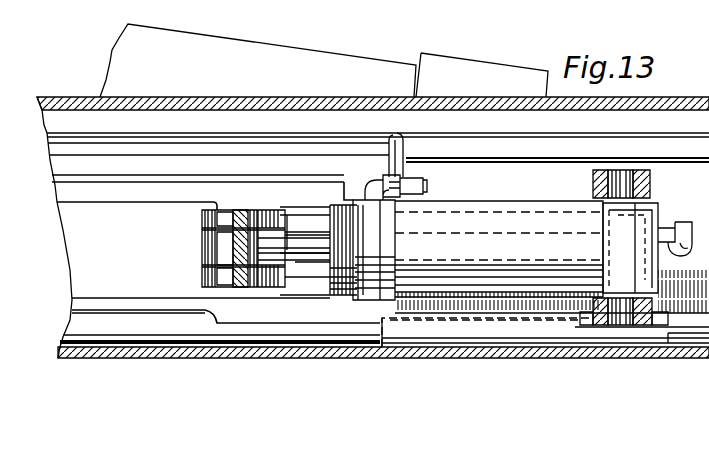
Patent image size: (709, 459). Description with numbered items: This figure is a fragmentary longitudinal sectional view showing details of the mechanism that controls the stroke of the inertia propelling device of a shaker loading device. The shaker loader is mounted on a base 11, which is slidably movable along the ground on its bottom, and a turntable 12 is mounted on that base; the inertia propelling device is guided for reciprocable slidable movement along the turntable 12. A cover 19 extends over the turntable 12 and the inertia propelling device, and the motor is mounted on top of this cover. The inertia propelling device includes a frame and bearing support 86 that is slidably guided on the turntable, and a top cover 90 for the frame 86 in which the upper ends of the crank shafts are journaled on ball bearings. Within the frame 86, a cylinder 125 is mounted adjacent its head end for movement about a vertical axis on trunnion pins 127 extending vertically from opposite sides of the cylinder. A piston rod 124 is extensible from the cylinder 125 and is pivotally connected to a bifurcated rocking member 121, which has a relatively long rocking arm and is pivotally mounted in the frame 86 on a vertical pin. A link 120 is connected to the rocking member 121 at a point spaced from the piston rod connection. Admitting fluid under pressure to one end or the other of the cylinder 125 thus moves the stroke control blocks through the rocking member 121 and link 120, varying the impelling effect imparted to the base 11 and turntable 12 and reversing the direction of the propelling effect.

The base 11 is at (454, 357).
The turntable 12 is at (683, 337).
The cover 19 is at (682, 97).
The frame and bearing support 86 is at (125, 337).
The top cover 90 is at (208, 143).
The link 120 is at (204, 246).
The bifurcated rocking member 121 is at (233, 285).
The piston rod 124 is at (302, 290).
The cylinder 125 is at (513, 188).
The trunnion pins 127 is at (612, 172).